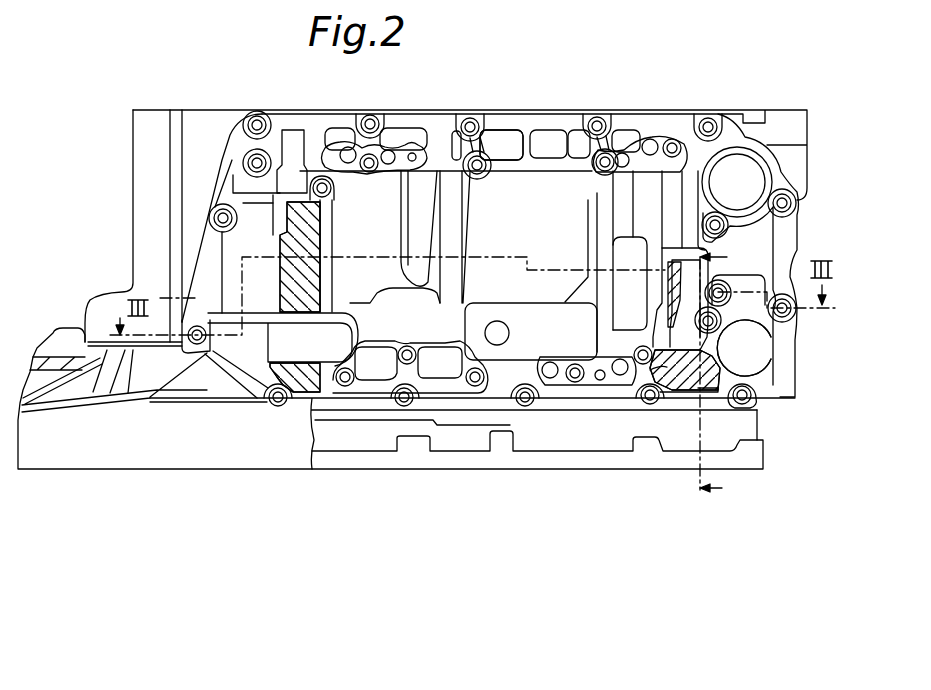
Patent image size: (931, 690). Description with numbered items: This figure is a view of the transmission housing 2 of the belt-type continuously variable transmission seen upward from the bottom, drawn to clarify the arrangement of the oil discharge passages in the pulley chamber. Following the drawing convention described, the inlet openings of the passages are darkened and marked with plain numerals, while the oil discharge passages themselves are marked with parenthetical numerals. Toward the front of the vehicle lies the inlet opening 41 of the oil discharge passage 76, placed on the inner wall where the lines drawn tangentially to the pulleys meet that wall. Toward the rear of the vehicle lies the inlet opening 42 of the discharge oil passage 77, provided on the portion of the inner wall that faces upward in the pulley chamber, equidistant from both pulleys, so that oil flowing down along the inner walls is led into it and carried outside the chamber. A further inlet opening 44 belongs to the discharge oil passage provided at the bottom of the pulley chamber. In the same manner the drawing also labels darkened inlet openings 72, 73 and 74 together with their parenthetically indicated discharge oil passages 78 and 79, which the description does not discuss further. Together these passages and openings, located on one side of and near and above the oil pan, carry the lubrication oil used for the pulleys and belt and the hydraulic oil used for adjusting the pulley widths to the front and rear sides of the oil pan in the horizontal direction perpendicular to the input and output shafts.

The transmission housing 2 is at (133, 157).
The inlet opening 44 is at (540, 185).
The inlet opening 42 is at (171, 257).
The discharge oil passage 77 is at (285, 288).
The inlet opening 41 is at (781, 352).
The oil discharge passage 76 is at (730, 362).
The oil passage boss 72 is at (747, 414).
The oil passage boss 73 is at (747, 414).
The oil passage boss 78 is at (716, 376).
The mounting boss 74 is at (267, 441).
The mounting boss 79 is at (293, 383).